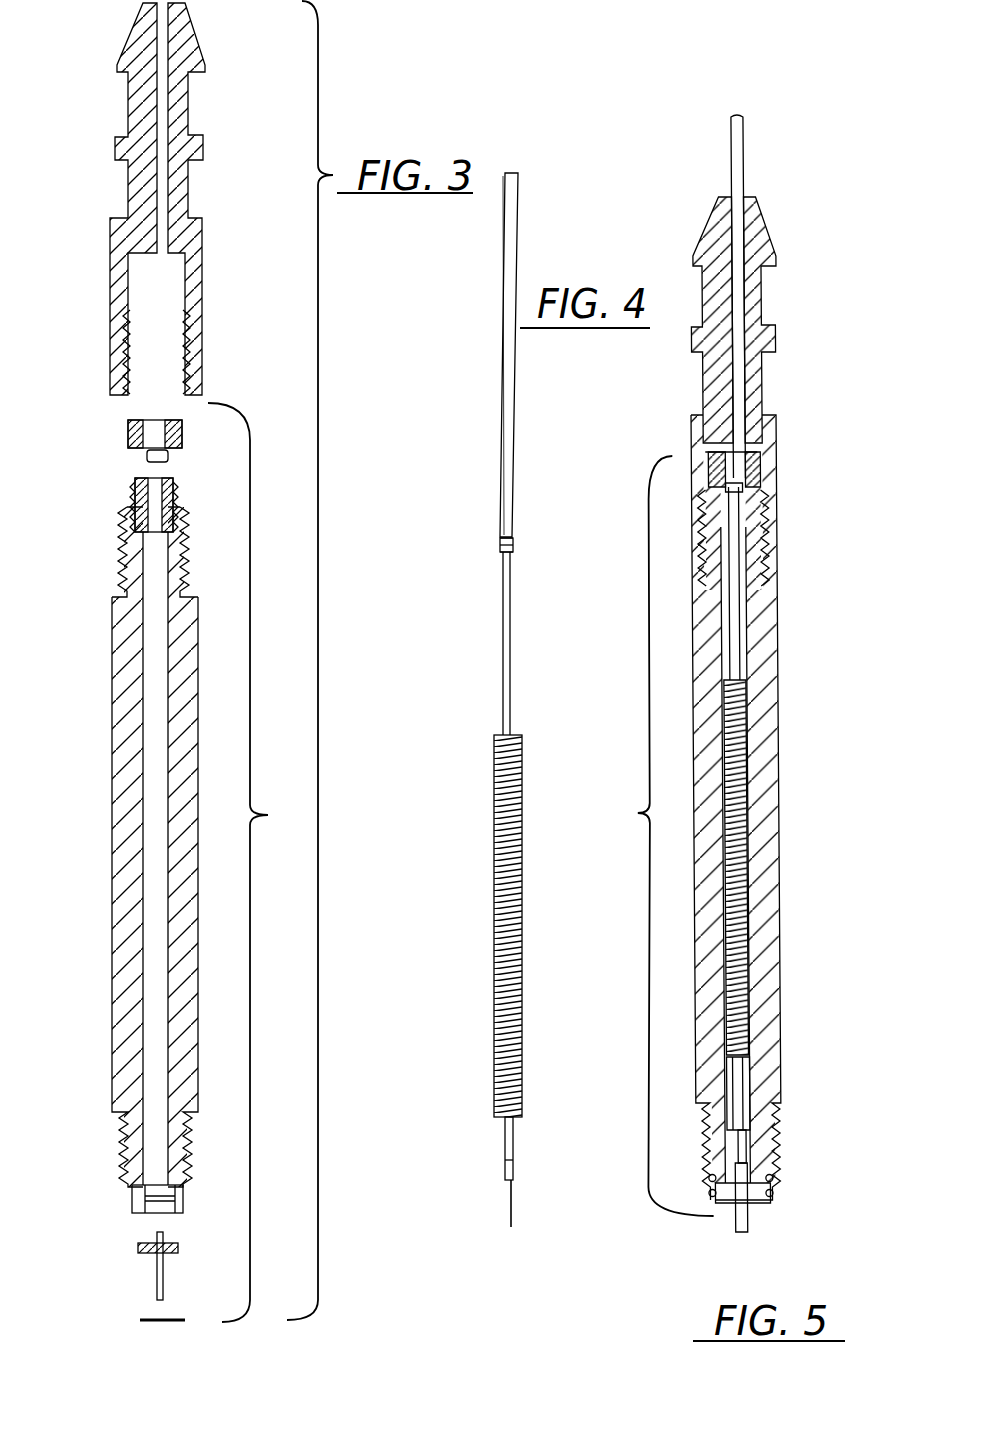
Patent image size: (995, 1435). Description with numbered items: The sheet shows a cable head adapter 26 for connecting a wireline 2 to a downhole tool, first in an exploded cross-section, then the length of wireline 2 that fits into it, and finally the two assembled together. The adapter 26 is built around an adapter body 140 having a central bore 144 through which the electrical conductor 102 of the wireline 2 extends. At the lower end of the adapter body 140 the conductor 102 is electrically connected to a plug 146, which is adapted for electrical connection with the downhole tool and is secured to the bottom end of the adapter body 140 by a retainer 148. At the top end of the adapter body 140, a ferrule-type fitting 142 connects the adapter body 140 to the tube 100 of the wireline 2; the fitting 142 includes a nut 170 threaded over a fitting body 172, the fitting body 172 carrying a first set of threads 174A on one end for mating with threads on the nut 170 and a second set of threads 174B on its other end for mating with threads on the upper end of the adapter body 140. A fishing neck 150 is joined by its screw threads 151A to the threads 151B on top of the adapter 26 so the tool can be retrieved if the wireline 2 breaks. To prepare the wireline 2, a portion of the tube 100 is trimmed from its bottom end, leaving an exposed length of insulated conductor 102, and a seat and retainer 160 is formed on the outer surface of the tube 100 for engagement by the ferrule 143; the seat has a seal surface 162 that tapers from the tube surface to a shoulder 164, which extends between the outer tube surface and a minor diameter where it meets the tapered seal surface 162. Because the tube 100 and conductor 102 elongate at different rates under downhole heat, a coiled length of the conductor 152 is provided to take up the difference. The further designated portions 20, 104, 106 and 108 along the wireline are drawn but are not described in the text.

In FIG. 4, the wireline 2 is at (500, 415).
In FIG. 5, the wireline 2 is at (747, 160).
In FIG. 4, the distal wire 20 is at (505, 1128).
In FIG. 3, the adapter 26 is at (255, 862).
In FIG. 5, the adapter 26 is at (654, 836).
In FIG. 4, the tube 100 is at (500, 495).
In FIG. 4, the electrical conductor 102 is at (502, 660).
In FIG. 4, the junction 104 is at (502, 556).
In FIG. 4, the distal tube section 106 is at (505, 1162).
In FIG. 4, the distal tip 108 is at (510, 1205).
In FIG. 3, the adapter body 140 is at (110, 797).
In FIG. 5, the adapter body 140 is at (763, 778).
In FIG. 3, the ferrule-type fitting 142 is at (125, 433).
In FIG. 3, the ferrule 143 is at (170, 456).
In FIG. 3, the bore 144 is at (155, 945).
In FIG. 5, the bore 144 is at (768, 1093).
In FIG. 3, the plug 146 is at (160, 1268).
In FIG. 5, the plug 146 is at (742, 1222).
In FIG. 3, the retainer 148 is at (155, 1318).
In FIG. 5, the retainer 148 is at (765, 1192).
In FIG. 3, the fishing neck 150 is at (128, 215).
In FIG. 5, the fishing neck 150 is at (773, 332).
In FIG. 3, the screw threads 151A is at (176, 352).
In FIG. 3, the threads 151B is at (118, 581).
In FIG. 4, the coiled length of the conductor 152 is at (496, 945).
In FIG. 5, the coiled length of the conductor 152 is at (746, 858).
In FIG. 4, the seat and retainer 160 is at (500, 538).
In FIG. 4, the seal surface 162 is at (514, 536).
In FIG. 4, the shoulder 164 is at (514, 548).
In FIG. 3, the nut 170 is at (180, 438).
In FIG. 3, the fitting body 172 is at (178, 495).
In FIG. 3, the first set of threads 174A is at (135, 487).
In FIG. 3, the second set of threads 174B is at (125, 532).